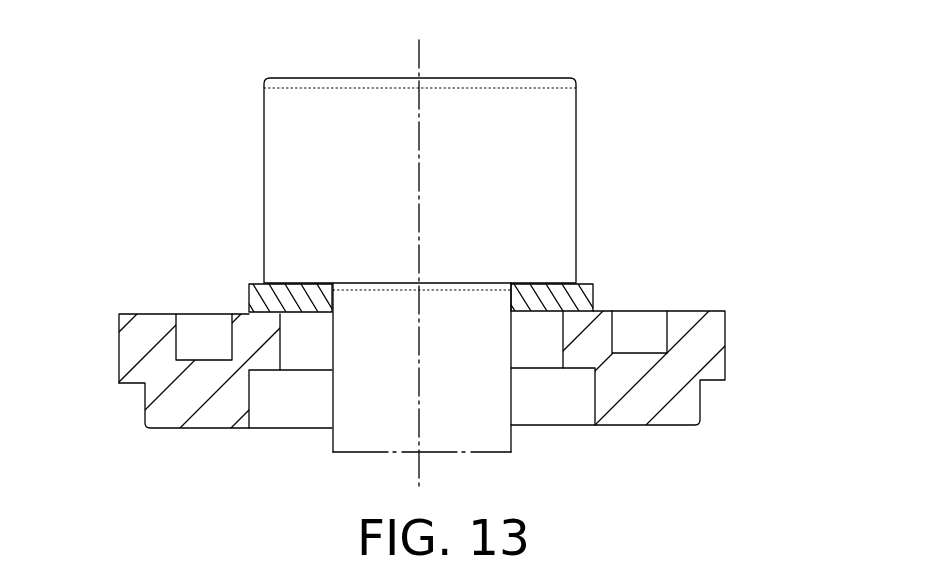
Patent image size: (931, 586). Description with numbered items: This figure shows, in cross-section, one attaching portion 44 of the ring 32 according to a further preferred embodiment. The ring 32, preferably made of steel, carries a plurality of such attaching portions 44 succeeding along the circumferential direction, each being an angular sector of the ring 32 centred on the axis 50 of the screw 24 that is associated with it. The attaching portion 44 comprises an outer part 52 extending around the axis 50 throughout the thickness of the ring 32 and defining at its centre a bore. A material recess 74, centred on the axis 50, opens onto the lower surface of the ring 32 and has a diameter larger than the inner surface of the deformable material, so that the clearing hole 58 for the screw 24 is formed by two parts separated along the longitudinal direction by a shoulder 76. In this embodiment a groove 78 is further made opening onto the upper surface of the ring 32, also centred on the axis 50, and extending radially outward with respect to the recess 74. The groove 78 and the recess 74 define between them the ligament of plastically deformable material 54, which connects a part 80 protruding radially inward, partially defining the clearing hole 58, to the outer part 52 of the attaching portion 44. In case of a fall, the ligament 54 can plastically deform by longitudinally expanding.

The screw 24 is at (290, 160).
The axis 50 is at (420, 57).
The outer part 52 is at (138, 330).
The ligament of plastically deformable material 54 is at (243, 358).
The clearing hole 58 is at (564, 333).
The material recess 74 is at (579, 400).
The shoulder 76 is at (270, 370).
The groove 78 is at (198, 330).
The protruding part 80 is at (251, 333).
The ring 32 is at (740, 323).
The attaching portion 44 is at (138, 427).